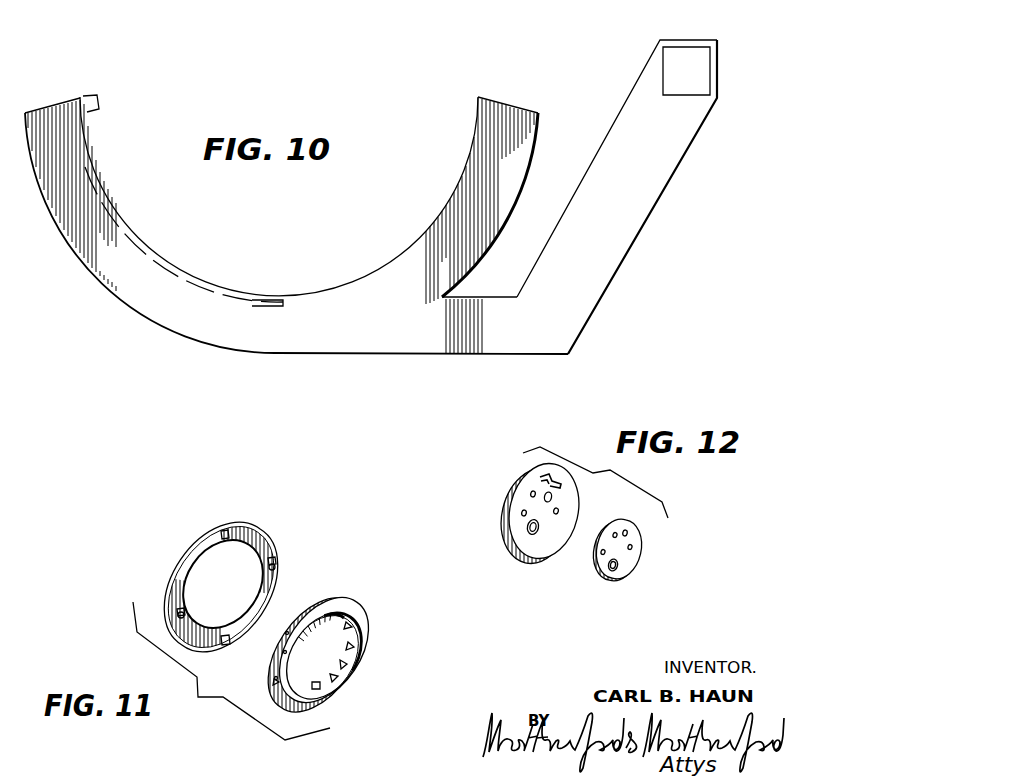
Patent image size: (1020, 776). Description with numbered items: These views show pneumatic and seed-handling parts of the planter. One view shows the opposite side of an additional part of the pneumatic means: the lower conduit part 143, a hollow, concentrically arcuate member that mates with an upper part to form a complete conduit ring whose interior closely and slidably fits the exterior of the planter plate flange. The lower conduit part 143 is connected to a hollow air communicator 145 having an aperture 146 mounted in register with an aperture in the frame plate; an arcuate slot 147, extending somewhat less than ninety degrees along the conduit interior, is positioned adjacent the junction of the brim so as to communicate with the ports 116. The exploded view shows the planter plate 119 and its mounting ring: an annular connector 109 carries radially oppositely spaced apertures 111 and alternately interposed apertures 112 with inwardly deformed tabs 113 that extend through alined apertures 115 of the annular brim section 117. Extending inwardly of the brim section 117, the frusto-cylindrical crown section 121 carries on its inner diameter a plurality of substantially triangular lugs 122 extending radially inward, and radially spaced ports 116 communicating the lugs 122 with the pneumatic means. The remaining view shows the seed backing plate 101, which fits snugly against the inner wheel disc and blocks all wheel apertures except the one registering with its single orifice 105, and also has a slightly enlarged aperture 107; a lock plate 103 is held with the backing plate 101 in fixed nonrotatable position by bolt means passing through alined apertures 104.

In FIG. 12, the backing plate 101 is at (505, 509).
In FIG. 12, the lock plate 103 is at (626, 567).
In FIG. 12, the apertures 104 is at (603, 554).
In FIG. 12, the orifice 105 is at (541, 471).
In FIG. 12, the enlarged aperture 107 is at (552, 500).
In FIG. 11, the annular connector 109 is at (263, 533).
In FIG. 11, the apertures 111 is at (228, 645).
In FIG. 11, the apertures 112 is at (184, 610).
In FIG. 11, the tabs 113 is at (185, 616).
In FIG. 11, the apertures 115 is at (275, 680).
In FIG. 11, the ports 116 is at (334, 683).
In FIG. 11, the brim section 117 is at (352, 603).
In FIG. 11, the planter plate 119 is at (386, 650).
In FIG. 11, the crown section 121 is at (331, 612).
In FIG. 11, the lugs 122 is at (322, 690).
In FIG. 10, the lower conduit part 143 is at (425, 237).
In FIG. 10, the air communicator 145 is at (632, 216).
In FIG. 10, the aperture 146 is at (703, 64).
In FIG. 10, the arcuate slot 147 is at (116, 207).